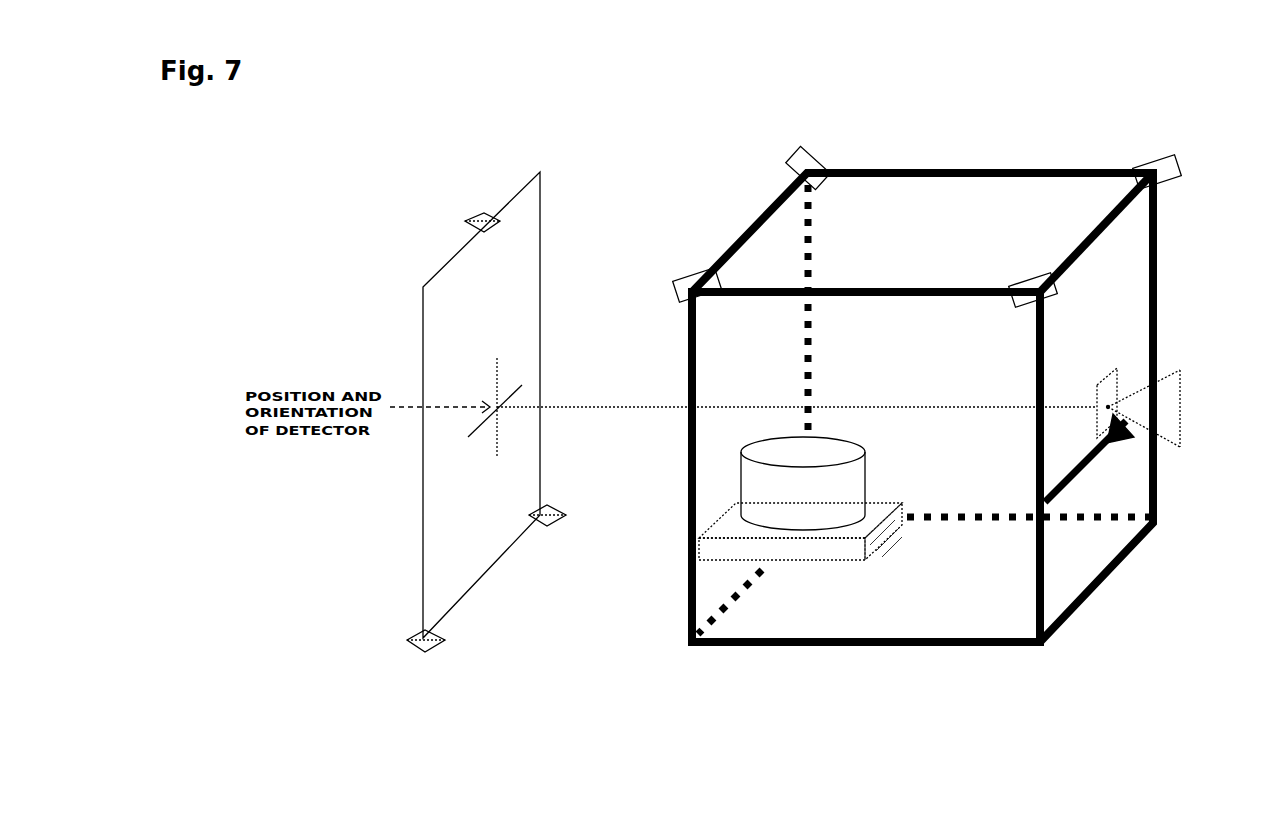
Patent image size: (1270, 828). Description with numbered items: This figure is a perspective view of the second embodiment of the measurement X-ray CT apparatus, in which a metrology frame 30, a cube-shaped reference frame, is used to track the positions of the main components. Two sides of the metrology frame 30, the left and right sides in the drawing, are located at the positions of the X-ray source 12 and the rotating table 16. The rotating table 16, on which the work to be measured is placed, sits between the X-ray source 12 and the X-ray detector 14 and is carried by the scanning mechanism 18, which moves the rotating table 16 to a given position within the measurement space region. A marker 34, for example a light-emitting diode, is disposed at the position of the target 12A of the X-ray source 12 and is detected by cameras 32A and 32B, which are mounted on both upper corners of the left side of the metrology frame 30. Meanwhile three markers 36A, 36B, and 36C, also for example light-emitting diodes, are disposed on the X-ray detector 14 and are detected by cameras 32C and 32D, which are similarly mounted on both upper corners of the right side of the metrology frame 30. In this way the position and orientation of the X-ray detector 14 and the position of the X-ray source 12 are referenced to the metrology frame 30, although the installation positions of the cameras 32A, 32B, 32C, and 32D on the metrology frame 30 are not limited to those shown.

The X-ray source 12 is at (1182, 425).
The target 12A is at (1114, 403).
The X-ray detector 14 is at (422, 318).
The rotating table 16 is at (867, 478).
The scanning mechanism 18 is at (830, 562).
The metrology frame 30 is at (860, 173).
The camera 32A is at (690, 268).
The camera 32B is at (795, 155).
The camera 32C is at (1048, 300).
The camera 32D is at (1160, 158).
The marker 34 is at (1110, 444).
The marker 36A is at (480, 215).
The marker 36B is at (427, 650).
The marker 36C is at (548, 526).